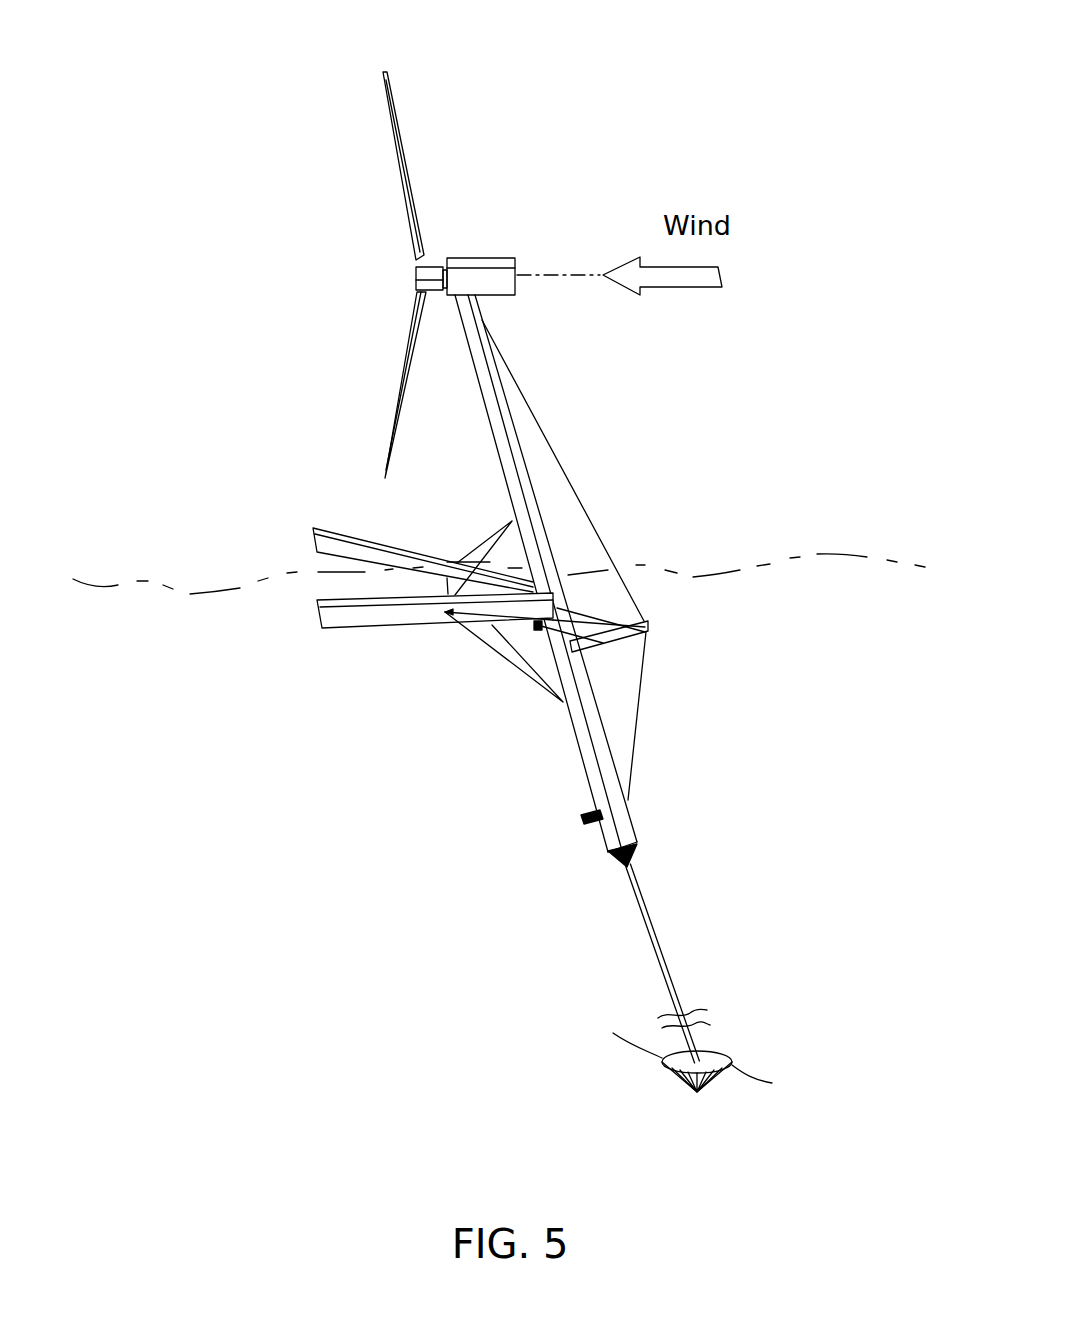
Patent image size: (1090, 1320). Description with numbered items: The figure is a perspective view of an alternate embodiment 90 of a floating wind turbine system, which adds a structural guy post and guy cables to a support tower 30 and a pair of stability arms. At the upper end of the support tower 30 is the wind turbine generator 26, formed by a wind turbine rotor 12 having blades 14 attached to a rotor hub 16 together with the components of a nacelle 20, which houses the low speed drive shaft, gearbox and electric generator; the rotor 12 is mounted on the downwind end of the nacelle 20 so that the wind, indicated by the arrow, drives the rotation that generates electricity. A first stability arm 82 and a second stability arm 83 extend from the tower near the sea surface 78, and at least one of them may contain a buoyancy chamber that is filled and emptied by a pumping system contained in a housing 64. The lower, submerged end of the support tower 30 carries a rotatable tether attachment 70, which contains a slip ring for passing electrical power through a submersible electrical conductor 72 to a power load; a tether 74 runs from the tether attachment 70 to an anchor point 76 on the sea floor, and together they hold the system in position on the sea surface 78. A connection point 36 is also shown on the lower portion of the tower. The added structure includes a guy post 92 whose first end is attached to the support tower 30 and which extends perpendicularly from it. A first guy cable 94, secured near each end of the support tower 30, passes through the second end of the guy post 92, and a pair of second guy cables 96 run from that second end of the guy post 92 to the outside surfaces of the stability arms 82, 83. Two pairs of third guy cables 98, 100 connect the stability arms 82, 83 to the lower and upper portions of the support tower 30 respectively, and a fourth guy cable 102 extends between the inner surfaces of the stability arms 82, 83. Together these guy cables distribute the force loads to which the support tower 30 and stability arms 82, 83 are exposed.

The wind turbine rotor 12 is at (324, 249).
The blades 14 is at (392, 140).
The rotor hub 16 is at (438, 294).
The nacelle 20 is at (508, 258).
The wind turbine generator 26 is at (514, 153).
The support tower 30 is at (503, 428).
The tower connection point 36 is at (595, 825).
The pumping system housing 64 is at (538, 632).
The rotatable tether attachment 70 is at (640, 848).
The submersible electrical conductor 72 is at (670, 948).
The tether 74 is at (650, 940).
The anchor point 76 is at (674, 1044).
The sea surface 78 is at (850, 553).
The first stability arm 82 is at (380, 628).
The second stability arm 83 is at (360, 527).
The alternate embodiment 90 is at (632, 125).
The guy post 92 is at (650, 628).
The first guy cable 94 is at (635, 600).
The second guy cables 96 is at (588, 615).
The third guy cables 98 is at (492, 626).
The third guy cables 100 is at (463, 555).
The fourth guy cable 102 is at (445, 594).